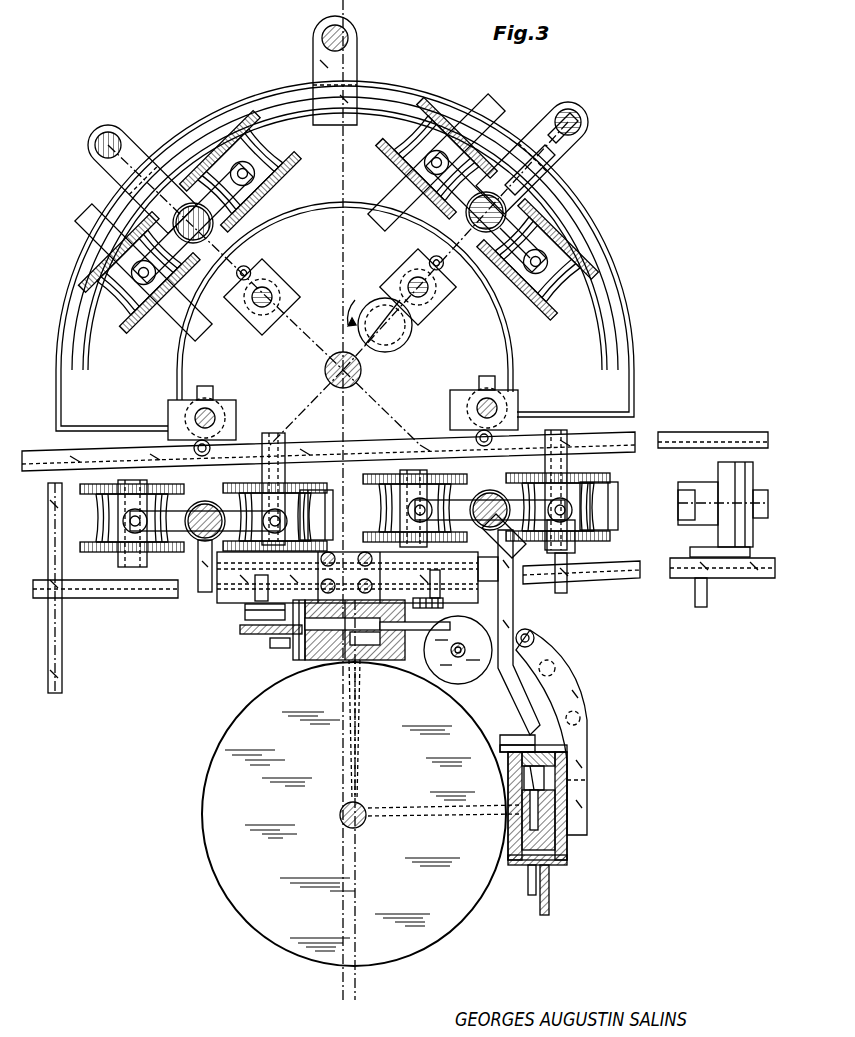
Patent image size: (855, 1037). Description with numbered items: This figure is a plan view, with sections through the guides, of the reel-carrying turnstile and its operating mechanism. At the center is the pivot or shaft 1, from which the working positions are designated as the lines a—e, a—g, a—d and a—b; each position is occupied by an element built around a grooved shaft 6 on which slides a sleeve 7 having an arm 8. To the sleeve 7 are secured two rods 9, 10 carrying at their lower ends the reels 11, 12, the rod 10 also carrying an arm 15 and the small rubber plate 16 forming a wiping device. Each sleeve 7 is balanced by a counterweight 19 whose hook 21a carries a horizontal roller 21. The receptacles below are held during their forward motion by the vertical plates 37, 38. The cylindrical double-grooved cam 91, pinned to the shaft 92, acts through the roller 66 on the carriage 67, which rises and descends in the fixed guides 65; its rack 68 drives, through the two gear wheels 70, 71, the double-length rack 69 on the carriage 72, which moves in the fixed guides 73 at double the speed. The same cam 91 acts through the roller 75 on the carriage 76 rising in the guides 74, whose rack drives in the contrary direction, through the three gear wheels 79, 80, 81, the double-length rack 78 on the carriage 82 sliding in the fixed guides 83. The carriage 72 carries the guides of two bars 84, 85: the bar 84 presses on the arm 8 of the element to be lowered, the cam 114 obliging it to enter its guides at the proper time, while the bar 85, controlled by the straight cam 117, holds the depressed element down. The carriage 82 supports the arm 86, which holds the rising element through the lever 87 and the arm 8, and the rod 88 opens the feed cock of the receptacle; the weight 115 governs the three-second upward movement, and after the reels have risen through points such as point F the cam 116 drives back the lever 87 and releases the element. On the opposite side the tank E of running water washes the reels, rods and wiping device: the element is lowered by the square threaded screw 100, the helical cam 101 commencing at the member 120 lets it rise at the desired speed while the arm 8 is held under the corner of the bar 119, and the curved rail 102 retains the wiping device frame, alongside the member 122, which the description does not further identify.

The pivot or shaft 1 is at (347, 386).
The central point of position lines a is at (334, 368).
The draining position a— b is at (100, 128).
The washing position a— d is at (590, 98).
The position a— e is at (306, 407).
The position a— g is at (381, 407).
The tank E is at (612, 383).
The point F is at (395, 438).
The grooved shaft 6 is at (178, 216).
The sleeve 7 is at (493, 495).
The arm 8 is at (508, 202).
The rod 9 is at (426, 495).
The rod 10 is at (566, 485).
The reel 11 is at (284, 162).
The reel 12 is at (148, 322).
The arm 15 is at (386, 212).
The small rubber plate 16 is at (330, 500).
The counterweight 19 is at (438, 305).
The horizontal roller 21 is at (395, 312).
The hook 21a is at (410, 336).
The vertical plate 37 is at (62, 672).
The vertical plate 38 is at (725, 524).
The fixed guides 65 is at (326, 660).
The roller 66 is at (358, 666).
The carriage 67 is at (365, 660).
The rack 68 is at (340, 668).
The rack 69 is at (417, 663).
The gear wheel 70 is at (292, 648).
The gear wheel 71 is at (262, 635).
The carriage 72 is at (350, 552).
The fixed guides 73 is at (418, 596).
The guides 74 is at (498, 766).
The roller 75 is at (502, 810).
The carriage 76 is at (505, 830).
The rack 78 is at (560, 752).
The gear wheel 79 is at (518, 860).
The gear wheel 80 is at (532, 896).
The gear wheel 81 is at (550, 900).
The carriage 82 is at (570, 822).
The fixed guides 83 is at (566, 762).
The bar or ruler 84 is at (200, 593).
The bar or ruler 85 is at (489, 582).
The arm 86 is at (574, 702).
The lever 87 is at (548, 672).
The rod 88 is at (582, 720).
The cylindrical cam 91 is at (245, 898).
The shaft 92 is at (363, 810).
The square threaded screw 100 is at (392, 348).
The helical cam 101 is at (273, 100).
The rail 102 is at (337, 127).
The cam 114 is at (243, 614).
The weight 115 is at (483, 662).
The cam 116 is at (498, 728).
The straight cam 117 is at (514, 618).
The bar 119 is at (548, 183).
The member 120 is at (577, 140).
The rod 122 is at (700, 594).